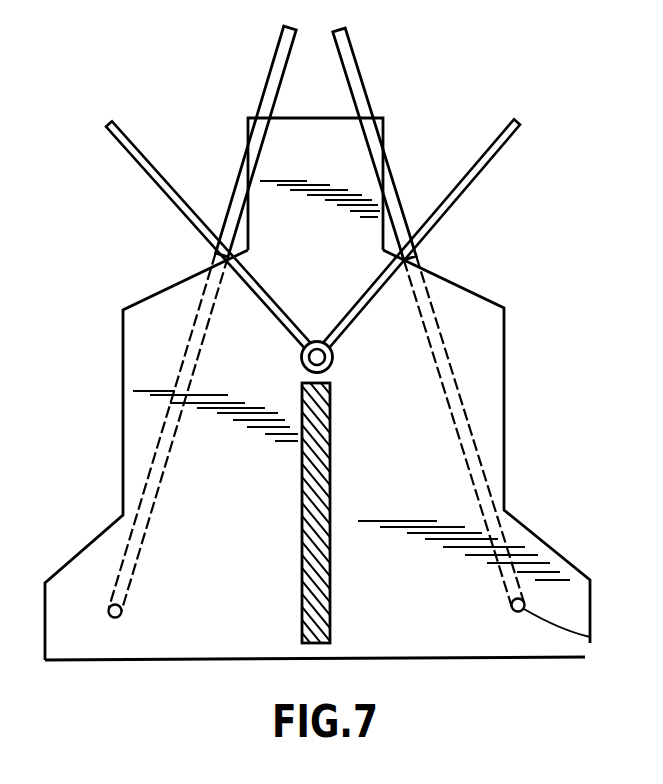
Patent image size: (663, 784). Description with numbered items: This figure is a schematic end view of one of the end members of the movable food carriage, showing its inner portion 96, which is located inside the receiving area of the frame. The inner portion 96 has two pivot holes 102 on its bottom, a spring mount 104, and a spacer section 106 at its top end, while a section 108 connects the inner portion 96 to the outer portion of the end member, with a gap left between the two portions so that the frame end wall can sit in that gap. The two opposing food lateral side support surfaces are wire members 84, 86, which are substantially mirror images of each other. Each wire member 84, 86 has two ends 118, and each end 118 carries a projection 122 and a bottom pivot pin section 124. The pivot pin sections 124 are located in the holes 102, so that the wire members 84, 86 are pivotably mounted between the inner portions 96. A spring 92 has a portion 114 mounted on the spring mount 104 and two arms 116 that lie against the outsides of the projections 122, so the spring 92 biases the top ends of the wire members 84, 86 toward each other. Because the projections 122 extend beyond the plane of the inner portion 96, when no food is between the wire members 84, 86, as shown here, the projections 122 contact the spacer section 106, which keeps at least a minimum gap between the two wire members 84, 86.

The front food lateral side support surface 84 is at (280, 46).
The rear food lateral side support surface 86 is at (350, 38).
The spring 92 is at (490, 165).
The inner portion 96 is at (507, 327).
The pivot hole 102 is at (112, 617).
The spring mount 104 is at (310, 340).
The spacer section 106 is at (368, 138).
The section 108 is at (332, 548).
The spring portion 114 is at (333, 368).
The spring arm 116 is at (134, 164).
The wire member end 118 is at (156, 445).
The projection 122 is at (235, 198).
The bottom pivot pin section 124 is at (120, 614).